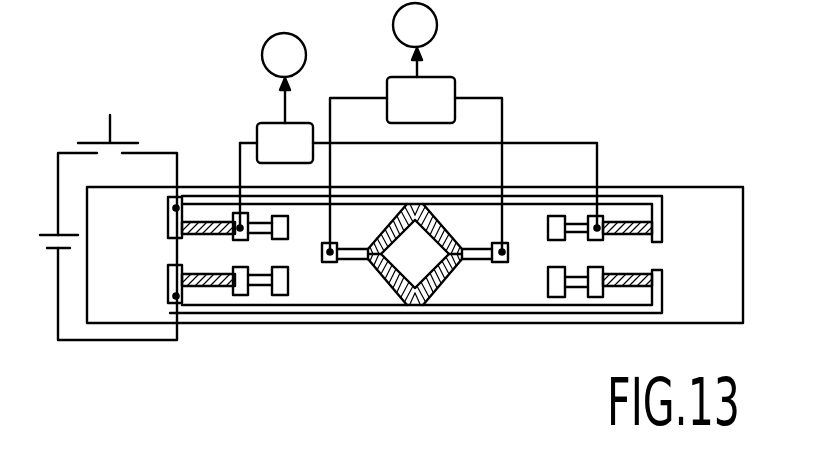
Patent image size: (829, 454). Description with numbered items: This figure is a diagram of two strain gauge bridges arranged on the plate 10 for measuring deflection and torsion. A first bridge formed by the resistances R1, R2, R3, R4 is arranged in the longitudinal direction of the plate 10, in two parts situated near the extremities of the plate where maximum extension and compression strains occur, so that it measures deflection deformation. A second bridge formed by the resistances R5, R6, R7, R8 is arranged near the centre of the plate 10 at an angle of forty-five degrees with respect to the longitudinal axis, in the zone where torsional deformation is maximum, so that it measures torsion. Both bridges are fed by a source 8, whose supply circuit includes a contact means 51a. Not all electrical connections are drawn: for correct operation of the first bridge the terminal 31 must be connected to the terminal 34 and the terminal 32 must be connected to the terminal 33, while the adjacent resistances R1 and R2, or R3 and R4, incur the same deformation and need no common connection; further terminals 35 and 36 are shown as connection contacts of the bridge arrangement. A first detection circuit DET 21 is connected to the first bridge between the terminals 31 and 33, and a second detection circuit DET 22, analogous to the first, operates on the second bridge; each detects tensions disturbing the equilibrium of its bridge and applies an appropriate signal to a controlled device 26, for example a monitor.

The source 8 is at (53, 250).
The contact means 51a is at (92, 143).
The plate 10 is at (713, 187).
The detection circuit DET 21 is at (257, 137).
The second detection circuit DET 22 is at (457, 88).
The controlled device 26 is at (349, 63).
The terminal 31 is at (275, 194).
The terminal 32 is at (279, 288).
The terminal 33 is at (548, 228).
The terminal 34 is at (555, 288).
The terminal 35 is at (275, 280).
The terminal 36 is at (511, 250).
The resistance R1 is at (188, 238).
The resistance R2 is at (189, 268).
The resistance R3 is at (640, 268).
The resistance R4 is at (640, 237).
The resistance R5 is at (390, 226).
The resistance R6 is at (378, 290).
The resistance R7 is at (442, 290).
The resistance R8 is at (438, 226).